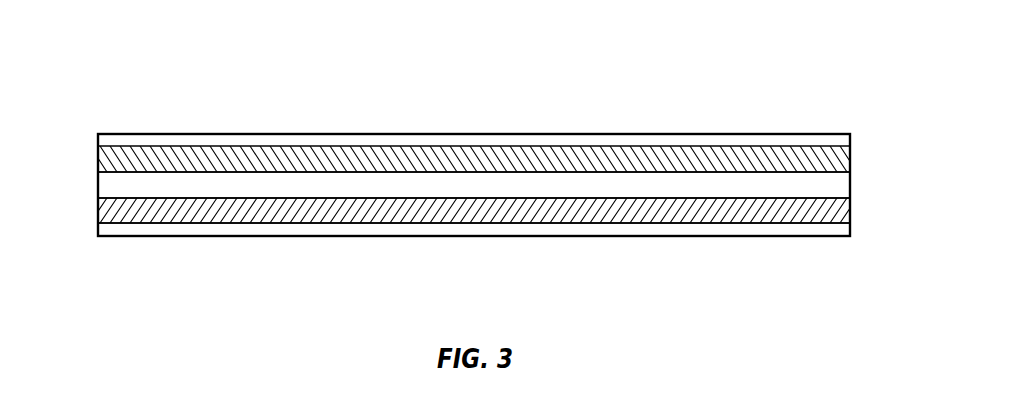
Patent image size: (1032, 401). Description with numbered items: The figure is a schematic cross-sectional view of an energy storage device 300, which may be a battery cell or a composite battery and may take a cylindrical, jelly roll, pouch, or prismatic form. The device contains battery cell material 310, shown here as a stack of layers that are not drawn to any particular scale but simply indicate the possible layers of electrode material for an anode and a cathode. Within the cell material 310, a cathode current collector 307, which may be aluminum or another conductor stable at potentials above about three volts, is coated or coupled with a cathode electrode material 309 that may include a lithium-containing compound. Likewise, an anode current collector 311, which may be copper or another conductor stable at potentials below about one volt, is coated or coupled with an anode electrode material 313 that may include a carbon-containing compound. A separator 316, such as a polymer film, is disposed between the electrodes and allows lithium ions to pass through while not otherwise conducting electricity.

The energy storage device 300 is at (230, 78).
The cathode current collector 307 is at (310, 237).
The cathode electrode material 309 is at (97, 200).
The battery cell material 310 is at (97, 172).
The anode current collector 311 is at (698, 133).
The anode electrode material 313 is at (851, 161).
The separator 316 is at (851, 191).